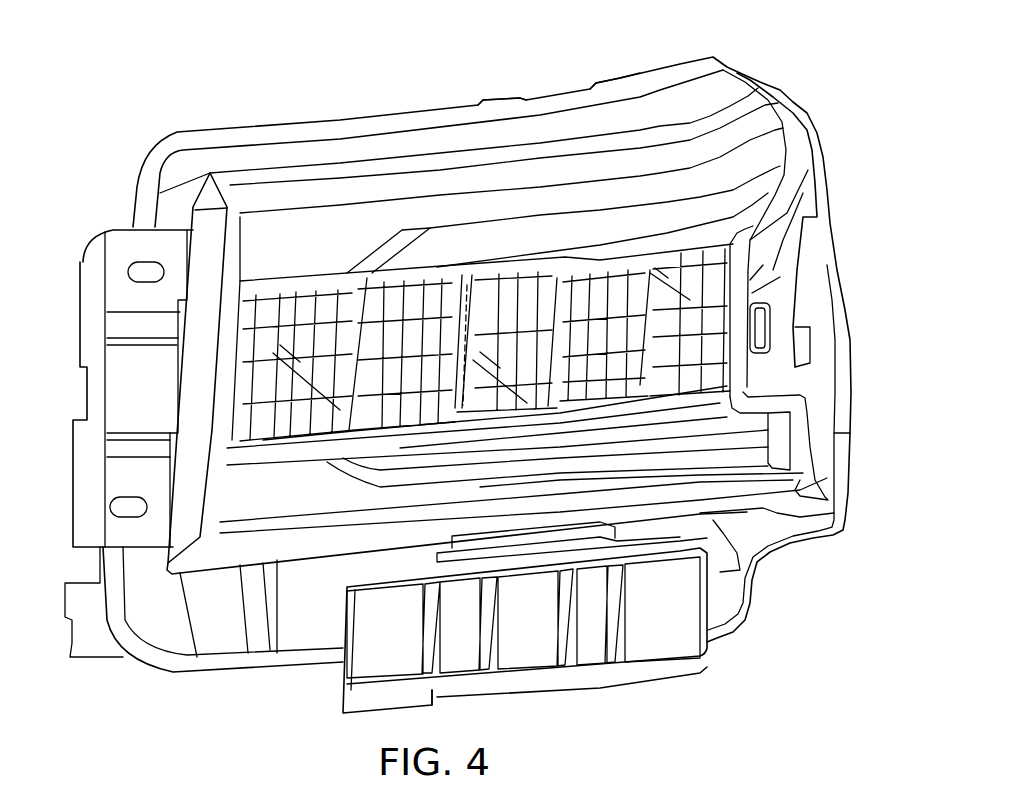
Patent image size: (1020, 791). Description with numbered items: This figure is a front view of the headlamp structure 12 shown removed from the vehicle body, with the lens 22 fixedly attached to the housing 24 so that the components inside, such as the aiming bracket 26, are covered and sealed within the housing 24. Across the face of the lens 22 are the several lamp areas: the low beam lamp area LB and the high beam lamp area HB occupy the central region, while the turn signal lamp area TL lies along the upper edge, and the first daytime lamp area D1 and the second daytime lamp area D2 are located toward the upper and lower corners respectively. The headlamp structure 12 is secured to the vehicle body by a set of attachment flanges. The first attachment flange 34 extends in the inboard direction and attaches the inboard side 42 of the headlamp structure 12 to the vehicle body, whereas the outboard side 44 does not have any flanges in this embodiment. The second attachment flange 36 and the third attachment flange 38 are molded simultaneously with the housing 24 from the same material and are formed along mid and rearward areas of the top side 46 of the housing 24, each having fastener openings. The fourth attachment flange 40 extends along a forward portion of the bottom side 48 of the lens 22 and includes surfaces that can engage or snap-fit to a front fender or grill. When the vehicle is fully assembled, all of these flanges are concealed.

The headlamp structure 12 is at (208, 84).
The lens 22 is at (433, 256).
The housing 24 is at (624, 62).
The aiming bracket 26 is at (597, 303).
The first attachment flange 34 is at (125, 293).
The second attachment flange 36 is at (497, 97).
The third attachment flange 38 is at (612, 74).
The fourth attachment flange 40 is at (650, 640).
The inboard side 42 is at (80, 390).
The outboard side 44 is at (780, 347).
The top side 46 is at (280, 125).
The bottom side 48 is at (293, 667).
The first daytime lamp area D1 is at (636, 192).
The second daytime lamp area D2 is at (713, 467).
The turn signal lamp area TL is at (657, 223).
The high beam lamp area HB is at (413, 327).
The low beam lamp area LB is at (527, 305).